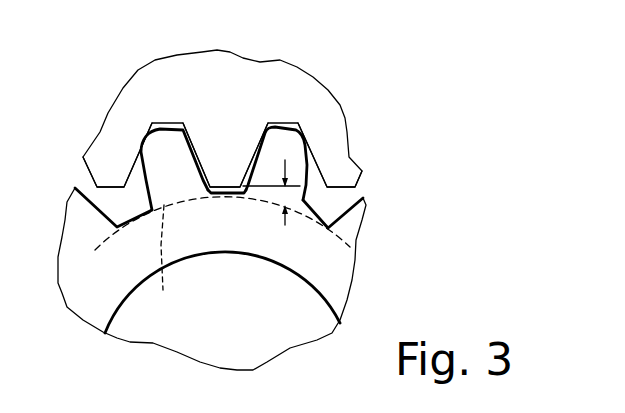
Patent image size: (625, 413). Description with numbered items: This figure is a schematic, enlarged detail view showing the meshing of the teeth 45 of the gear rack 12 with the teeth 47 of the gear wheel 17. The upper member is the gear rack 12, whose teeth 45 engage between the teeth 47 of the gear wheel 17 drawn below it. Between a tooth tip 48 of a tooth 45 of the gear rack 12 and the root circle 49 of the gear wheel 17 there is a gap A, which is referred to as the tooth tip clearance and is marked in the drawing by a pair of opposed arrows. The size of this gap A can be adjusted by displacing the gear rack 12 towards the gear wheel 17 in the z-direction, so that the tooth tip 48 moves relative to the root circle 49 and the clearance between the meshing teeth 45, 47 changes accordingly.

The gear rack 12 is at (248, 77).
The teeth 45 is at (112, 173).
The teeth 47 is at (276, 152).
The tooth tip 48 is at (227, 182).
The root circle 49 is at (167, 261).
The gear wheel 17 is at (340, 268).
The gap A is at (288, 192).